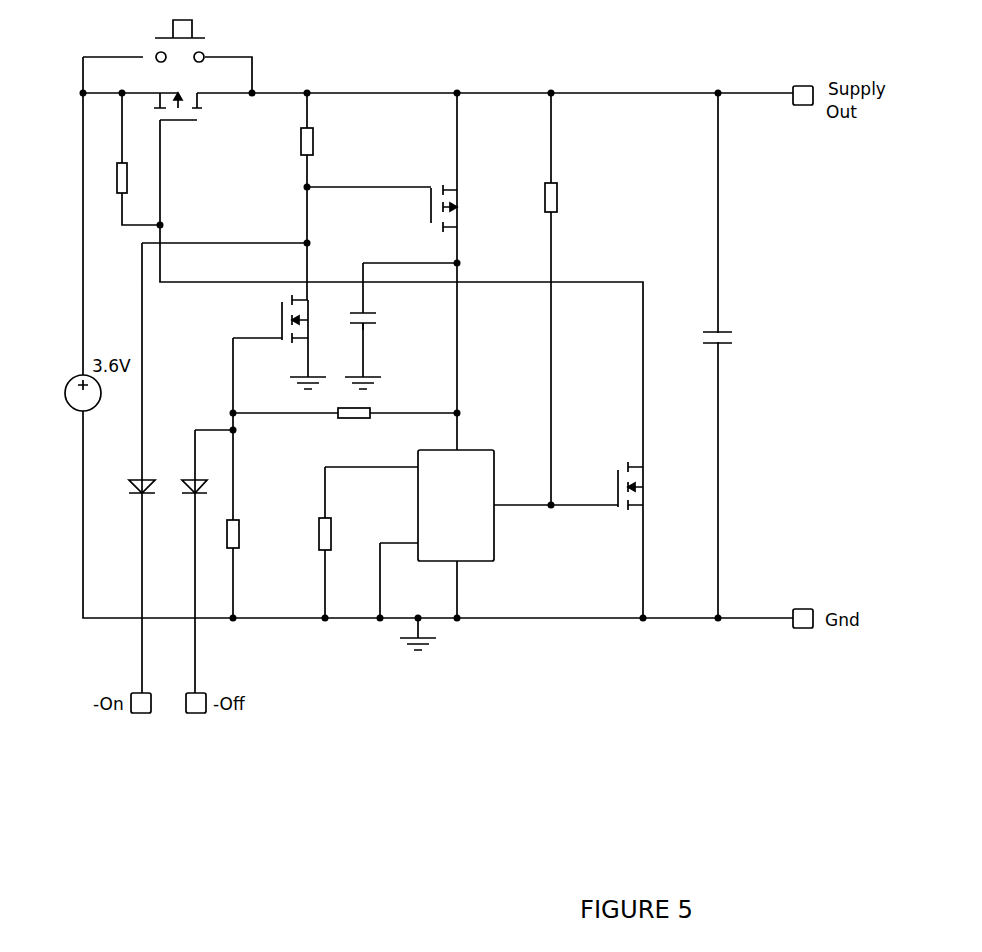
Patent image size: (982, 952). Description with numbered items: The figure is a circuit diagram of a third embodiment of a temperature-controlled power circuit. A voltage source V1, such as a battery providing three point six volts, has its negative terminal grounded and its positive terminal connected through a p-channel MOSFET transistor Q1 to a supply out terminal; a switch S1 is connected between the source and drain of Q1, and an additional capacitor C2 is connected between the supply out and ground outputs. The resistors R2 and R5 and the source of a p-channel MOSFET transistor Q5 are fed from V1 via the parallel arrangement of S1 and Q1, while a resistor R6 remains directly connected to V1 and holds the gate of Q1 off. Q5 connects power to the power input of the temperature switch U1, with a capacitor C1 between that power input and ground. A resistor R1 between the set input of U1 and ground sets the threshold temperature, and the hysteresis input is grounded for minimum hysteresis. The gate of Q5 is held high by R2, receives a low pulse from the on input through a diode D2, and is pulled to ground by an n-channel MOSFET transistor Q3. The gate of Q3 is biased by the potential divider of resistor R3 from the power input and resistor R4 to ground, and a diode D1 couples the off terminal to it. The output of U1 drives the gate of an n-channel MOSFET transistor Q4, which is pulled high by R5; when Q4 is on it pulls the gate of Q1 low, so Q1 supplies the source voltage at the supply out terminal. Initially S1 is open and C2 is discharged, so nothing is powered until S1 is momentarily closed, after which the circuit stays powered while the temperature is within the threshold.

The switch S1 is at (167, 56).
The p-channel MOSFET transistor Q1 is at (178, 159).
The resistor R6 is at (138, 159).
The resistor R2 is at (321, 141).
The p-channel MOSFET transistor Q5 is at (382, 208).
The resistor R5 is at (564, 197).
The capacitor C1 is at (376, 296).
The n-channel MOSFET transistor Q3 is at (270, 330).
The additional capacitor C2 is at (733, 339).
The voltage source V1 is at (65, 393).
The resistor R3 is at (345, 425).
The diode D1 is at (188, 474).
The diode D2 is at (131, 497).
The resistor R4 is at (246, 534).
The resistor R1 is at (313, 534).
The temperature switch U1 is at (449, 509).
The n-channel MOSFET transistor Q4 is at (648, 540).